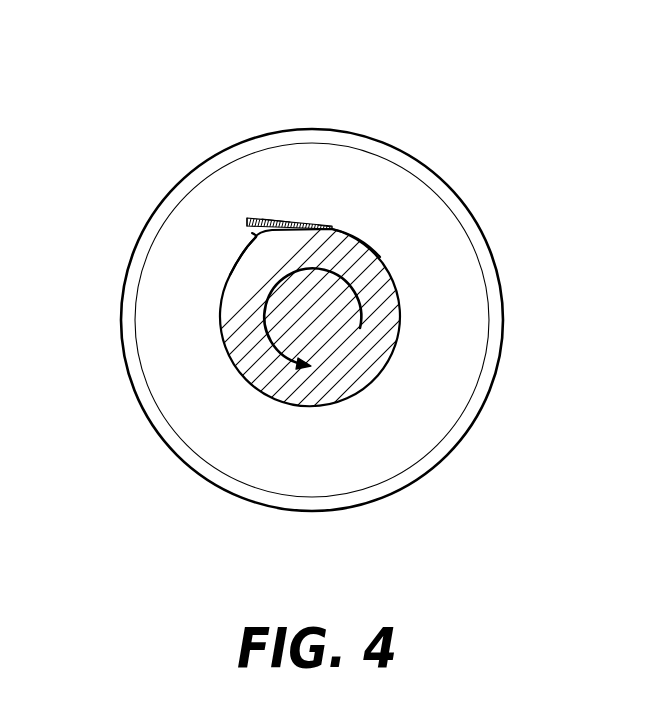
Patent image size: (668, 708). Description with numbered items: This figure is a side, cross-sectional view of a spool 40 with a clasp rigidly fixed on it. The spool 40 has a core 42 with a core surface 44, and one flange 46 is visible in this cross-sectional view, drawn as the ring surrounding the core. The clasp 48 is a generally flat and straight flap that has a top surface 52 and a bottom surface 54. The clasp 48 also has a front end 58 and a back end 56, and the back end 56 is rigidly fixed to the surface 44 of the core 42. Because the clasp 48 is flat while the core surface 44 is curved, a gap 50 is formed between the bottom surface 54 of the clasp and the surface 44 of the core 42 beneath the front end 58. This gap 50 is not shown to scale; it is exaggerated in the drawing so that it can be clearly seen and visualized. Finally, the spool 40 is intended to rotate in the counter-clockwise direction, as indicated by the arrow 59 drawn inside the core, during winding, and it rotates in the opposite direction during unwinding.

The spool 40 is at (473, 85).
The core 42 is at (378, 298).
The core surface 44 is at (380, 257).
The flange 46 is at (312, 163).
The clasp 48 is at (255, 216).
The gap 50 is at (252, 233).
The top surface 52 is at (277, 220).
The bottom surface 54 is at (240, 254).
The back end 56 is at (326, 224).
The front end 58 is at (248, 219).
The arrow 59 is at (275, 355).